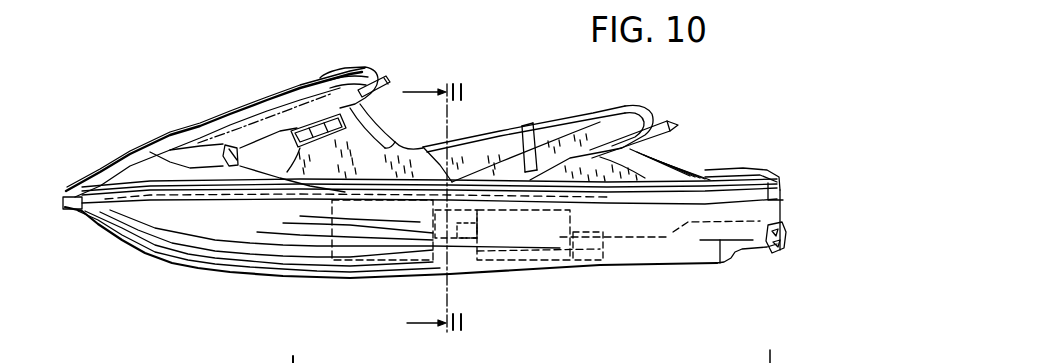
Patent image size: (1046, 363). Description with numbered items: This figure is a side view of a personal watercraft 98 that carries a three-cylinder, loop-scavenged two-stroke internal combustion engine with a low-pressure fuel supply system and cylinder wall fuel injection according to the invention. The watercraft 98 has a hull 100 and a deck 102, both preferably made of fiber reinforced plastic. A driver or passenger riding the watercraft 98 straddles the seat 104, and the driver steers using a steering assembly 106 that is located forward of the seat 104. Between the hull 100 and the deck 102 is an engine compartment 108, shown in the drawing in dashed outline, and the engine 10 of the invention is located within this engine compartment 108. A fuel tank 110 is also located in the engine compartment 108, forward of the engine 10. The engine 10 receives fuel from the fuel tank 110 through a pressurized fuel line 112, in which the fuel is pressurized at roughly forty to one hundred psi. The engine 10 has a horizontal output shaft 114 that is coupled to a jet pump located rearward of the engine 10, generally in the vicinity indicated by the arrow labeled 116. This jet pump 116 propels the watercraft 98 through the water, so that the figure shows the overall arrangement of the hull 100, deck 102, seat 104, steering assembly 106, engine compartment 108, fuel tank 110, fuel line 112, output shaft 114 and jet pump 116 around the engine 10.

The engine 10 is at (527, 250).
The personal watercraft 98 is at (224, 86).
The hull 100 is at (168, 263).
The deck 102 is at (109, 163).
The seat 104 is at (557, 121).
The steering assembly 106 is at (386, 82).
The engine compartment 108 is at (238, 242).
The fuel tank 110 is at (347, 253).
The pressurized fuel line 112 is at (452, 208).
The horizontal output shaft 114 is at (600, 253).
The jet pump 116 is at (715, 266).